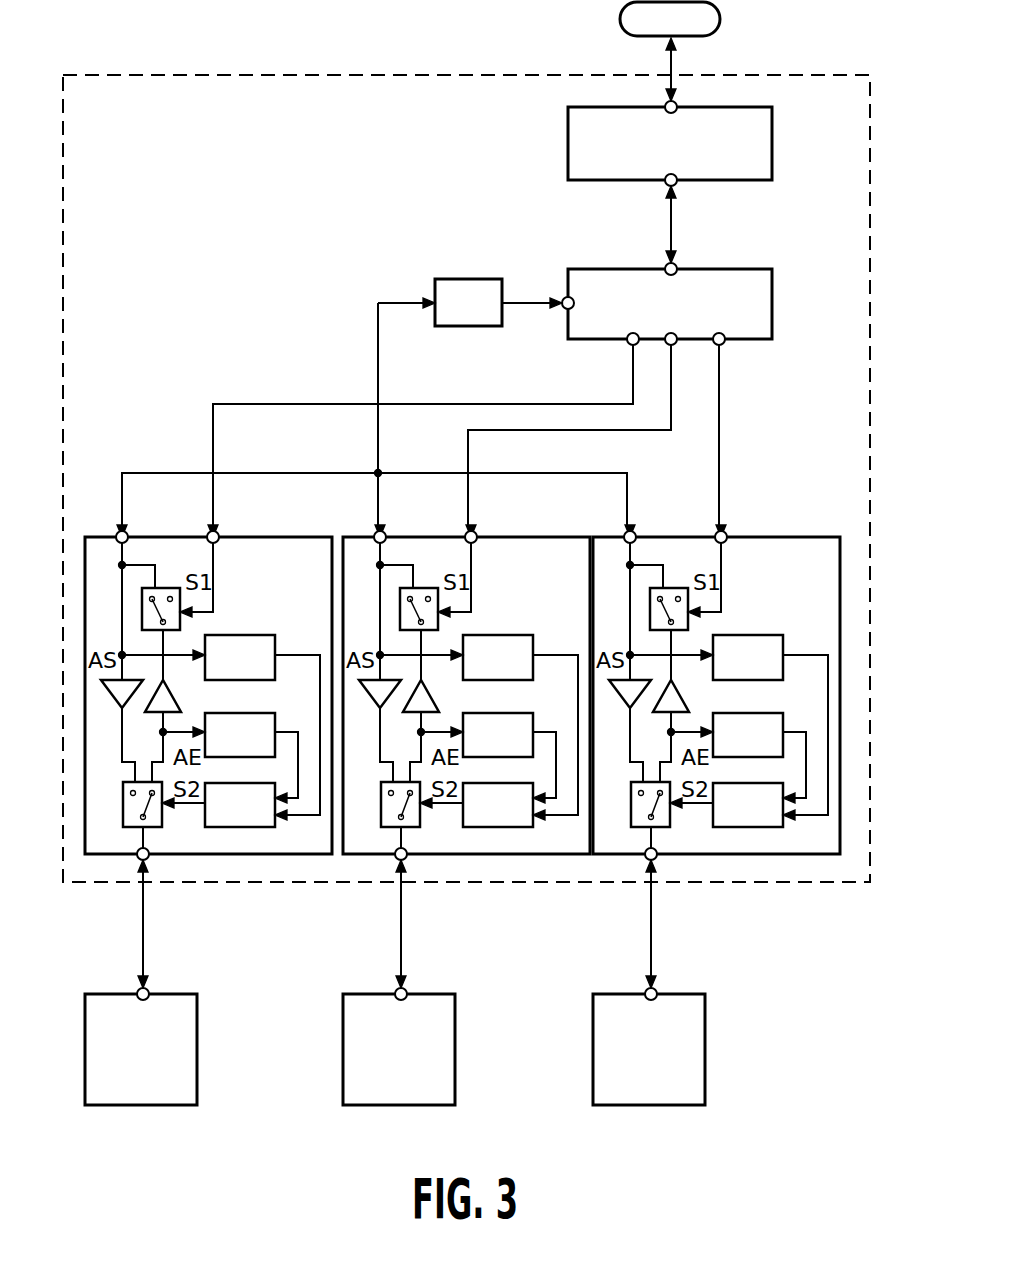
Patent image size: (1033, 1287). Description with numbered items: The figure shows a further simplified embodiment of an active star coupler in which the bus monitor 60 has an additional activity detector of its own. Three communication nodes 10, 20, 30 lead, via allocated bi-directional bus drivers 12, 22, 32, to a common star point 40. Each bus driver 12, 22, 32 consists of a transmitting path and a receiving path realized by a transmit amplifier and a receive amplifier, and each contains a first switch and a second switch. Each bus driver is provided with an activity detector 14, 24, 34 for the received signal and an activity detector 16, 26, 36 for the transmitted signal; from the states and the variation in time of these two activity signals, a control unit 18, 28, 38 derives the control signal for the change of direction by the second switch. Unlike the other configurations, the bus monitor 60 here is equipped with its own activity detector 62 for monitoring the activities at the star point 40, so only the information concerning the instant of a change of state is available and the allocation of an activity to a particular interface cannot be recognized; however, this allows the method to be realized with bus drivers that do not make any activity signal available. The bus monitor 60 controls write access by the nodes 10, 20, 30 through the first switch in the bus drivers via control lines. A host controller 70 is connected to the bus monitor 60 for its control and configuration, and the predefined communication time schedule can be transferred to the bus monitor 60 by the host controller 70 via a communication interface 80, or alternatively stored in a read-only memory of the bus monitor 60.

The communication node 10 is at (140, 1085).
The bus driver 12 is at (208, 756).
The activity detector 14 is at (250, 718).
The activity detector 16 is at (247, 642).
The control unit 18 is at (250, 793).
The communication node 20 is at (399, 1071).
The bus driver 22 is at (466, 756).
The activity detector 24 is at (510, 723).
The activity detector 26 is at (498, 635).
The control unit 28 is at (510, 796).
The communication node 30 is at (649, 1071).
The bus driver 32 is at (716, 756).
The activity detector 34 is at (760, 723).
The activity detector 36 is at (748, 635).
The control unit 38 is at (760, 796).
The star point 40 is at (378, 473).
The bus monitor 60 is at (772, 305).
The activity detector 62 is at (467, 288).
The host controller 70 is at (772, 140).
The communication interface 80 is at (720, 20).